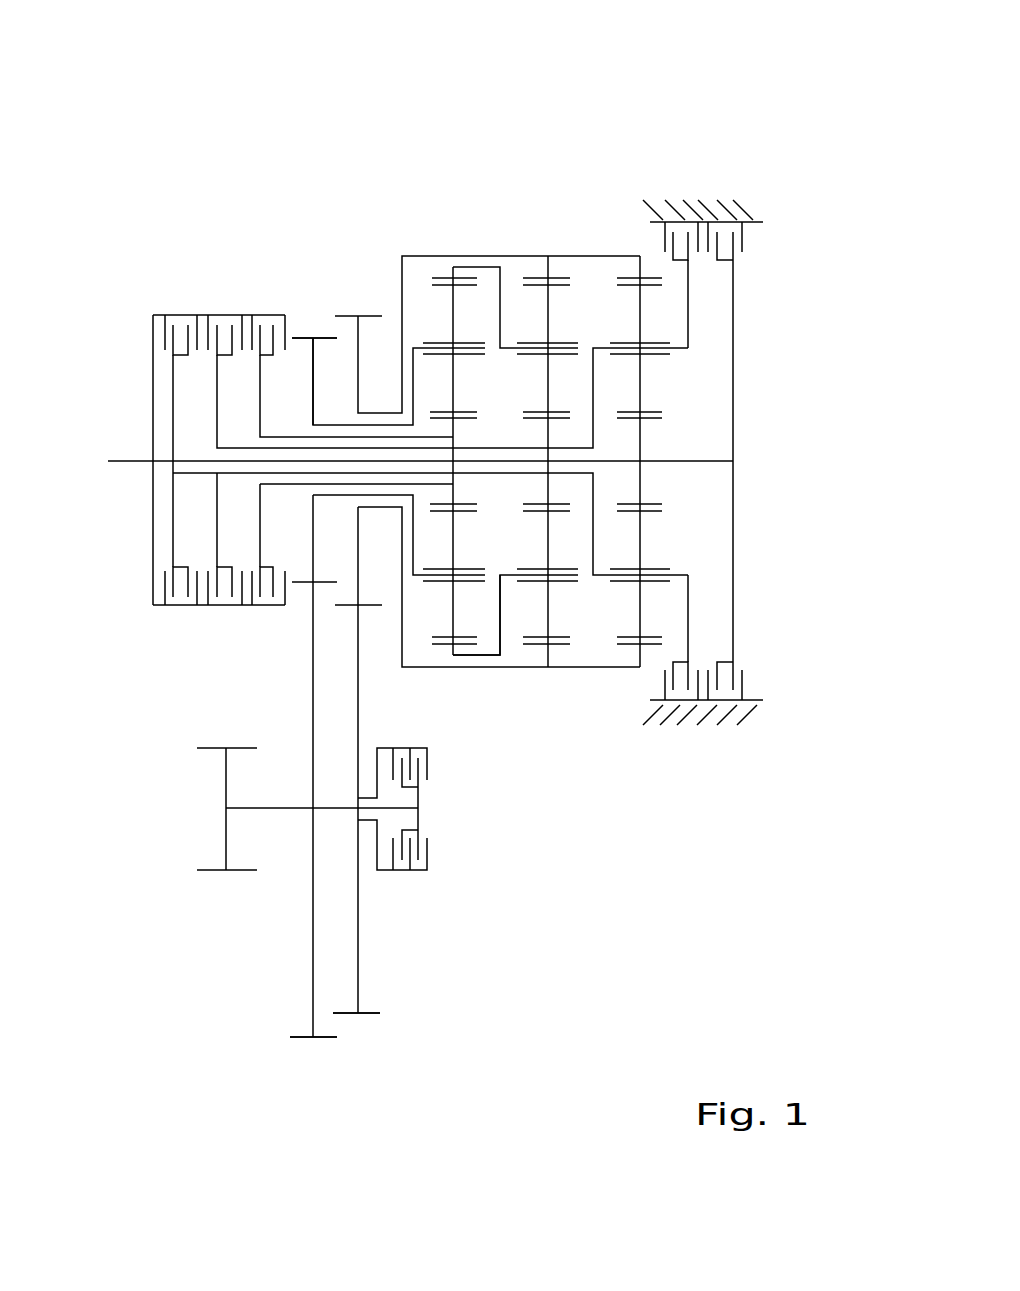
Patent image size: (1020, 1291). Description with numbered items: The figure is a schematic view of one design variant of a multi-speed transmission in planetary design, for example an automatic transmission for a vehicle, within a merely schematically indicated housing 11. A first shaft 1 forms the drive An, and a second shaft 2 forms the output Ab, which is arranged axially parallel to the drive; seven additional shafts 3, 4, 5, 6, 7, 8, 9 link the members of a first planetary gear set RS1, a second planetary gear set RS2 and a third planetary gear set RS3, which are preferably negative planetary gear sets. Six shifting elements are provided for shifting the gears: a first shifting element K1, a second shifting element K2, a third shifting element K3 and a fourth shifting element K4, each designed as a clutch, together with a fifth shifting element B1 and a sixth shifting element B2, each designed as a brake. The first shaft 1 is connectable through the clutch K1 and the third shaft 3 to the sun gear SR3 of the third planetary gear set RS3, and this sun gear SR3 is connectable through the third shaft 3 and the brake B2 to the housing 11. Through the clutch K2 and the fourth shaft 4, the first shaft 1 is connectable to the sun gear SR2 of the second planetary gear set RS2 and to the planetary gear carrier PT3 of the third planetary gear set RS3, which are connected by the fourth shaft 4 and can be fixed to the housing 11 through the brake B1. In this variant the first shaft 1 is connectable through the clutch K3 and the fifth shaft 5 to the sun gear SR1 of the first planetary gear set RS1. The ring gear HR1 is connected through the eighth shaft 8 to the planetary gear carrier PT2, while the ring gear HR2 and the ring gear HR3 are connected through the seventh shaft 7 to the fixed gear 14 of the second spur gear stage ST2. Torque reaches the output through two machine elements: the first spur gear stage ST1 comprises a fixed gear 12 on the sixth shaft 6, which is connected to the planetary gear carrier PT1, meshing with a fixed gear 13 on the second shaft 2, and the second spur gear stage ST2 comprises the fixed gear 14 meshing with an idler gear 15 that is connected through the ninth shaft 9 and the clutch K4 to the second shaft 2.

The first shaft 1 is at (147, 461).
The second shaft 2 is at (245, 812).
The third shaft 3 is at (152, 438).
The fourth shaft 4 is at (212, 410).
The fifth shaft 5 is at (257, 392).
The sixth shaft 6 is at (342, 493).
The seventh shaft 7 is at (377, 507).
The eighth shaft 8 is at (500, 613).
The ninth shaft 9 is at (377, 830).
The housing 11 is at (707, 207).
The fixed gear 12 is at (302, 338).
The fixed gear 13 is at (305, 1038).
The fixed gear 14 is at (315, 318).
The idler gear 15 is at (352, 1016).
The drive AN is at (108, 461).
The output Ab is at (226, 788).
The first shifting element K1 is at (152, 308).
The second shifting element K2 is at (210, 308).
The third shifting element K3 is at (257, 308).
The fourth shifting element K4 is at (412, 885).
The fifth shifting element B1 is at (678, 222).
The sixth shifting element B2 is at (740, 243).
The first planetary gear set RS1 is at (453, 250).
The second planetary gear set RS2 is at (548, 246).
The third planetary gear set RS3 is at (640, 250).
The sun gear SR1 is at (457, 432).
The sun gear SR2 is at (550, 433).
The sun gear SR3 is at (641, 432).
The ring gear HR1 is at (446, 272).
The ring gear HR2 is at (557, 272).
The ring gear HR3 is at (633, 272).
The planetary gear carrier PT1 is at (437, 337).
The planetary gear carrier PT2 is at (530, 337).
The planetary gear carrier PT3 is at (648, 337).
The first spur gear stage ST1 is at (315, 326).
The second spur gear stage ST2 is at (358, 304).